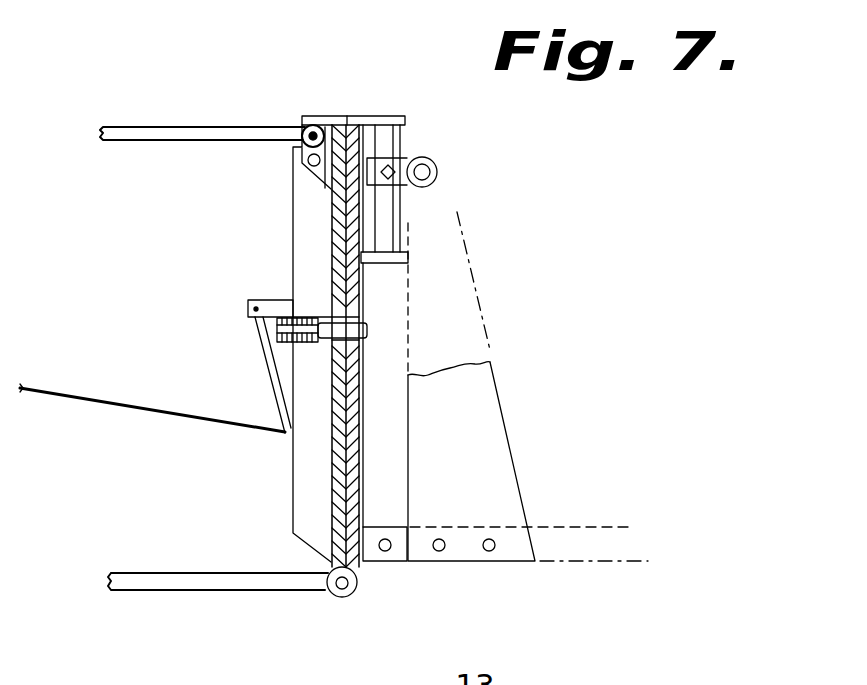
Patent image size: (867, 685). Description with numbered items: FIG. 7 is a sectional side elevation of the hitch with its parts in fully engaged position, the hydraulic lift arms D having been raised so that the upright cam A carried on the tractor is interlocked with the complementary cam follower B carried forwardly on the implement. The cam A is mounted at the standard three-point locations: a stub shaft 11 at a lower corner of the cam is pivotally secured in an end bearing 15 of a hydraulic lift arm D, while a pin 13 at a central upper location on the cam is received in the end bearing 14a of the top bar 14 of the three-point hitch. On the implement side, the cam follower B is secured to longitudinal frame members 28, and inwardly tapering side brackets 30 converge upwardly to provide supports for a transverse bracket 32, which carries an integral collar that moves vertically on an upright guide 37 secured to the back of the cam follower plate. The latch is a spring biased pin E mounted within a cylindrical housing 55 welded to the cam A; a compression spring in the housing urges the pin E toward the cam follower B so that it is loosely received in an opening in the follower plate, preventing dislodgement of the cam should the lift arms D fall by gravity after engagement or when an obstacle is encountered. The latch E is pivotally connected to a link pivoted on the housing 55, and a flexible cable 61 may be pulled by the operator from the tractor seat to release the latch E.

The top bar 14 is at (148, 127).
The end bearing 14a is at (305, 125).
The pin 13 is at (323, 120).
The transverse bracket 32 is at (433, 162).
The upright guide 37 is at (393, 212).
The cylindrical housing 55 is at (315, 317).
The latching means E is at (367, 328).
The upright cam A is at (333, 475).
The cam follower B is at (362, 430).
The side brackets 30 is at (488, 457).
The flexible cable 61 is at (112, 407).
The end bearing 15 is at (357, 587).
The stub shaft 11 is at (347, 598).
The hydraulic lift arms D is at (190, 583).
The longitudinal frame members 28 is at (570, 563).